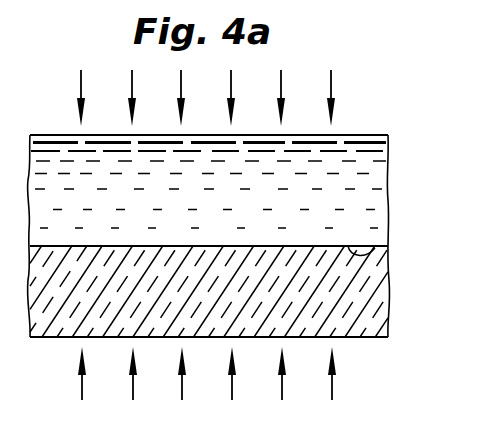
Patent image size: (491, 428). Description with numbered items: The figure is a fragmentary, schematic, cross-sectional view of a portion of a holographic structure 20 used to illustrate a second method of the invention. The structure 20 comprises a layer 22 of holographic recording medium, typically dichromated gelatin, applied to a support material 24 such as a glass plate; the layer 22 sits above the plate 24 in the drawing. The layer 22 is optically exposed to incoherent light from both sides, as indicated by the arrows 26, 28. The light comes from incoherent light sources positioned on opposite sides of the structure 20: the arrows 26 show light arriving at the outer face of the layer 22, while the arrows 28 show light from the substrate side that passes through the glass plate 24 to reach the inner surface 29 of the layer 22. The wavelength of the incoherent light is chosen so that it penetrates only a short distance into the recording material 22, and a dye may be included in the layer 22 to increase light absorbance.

The holographic structure 20 is at (401, 136).
The layer of holographic recording medium 22 is at (380, 190).
The support material 24 is at (369, 307).
The arrows 26 is at (132, 83).
The arrows 28 is at (133, 382).
The inner surface 29 is at (360, 257).